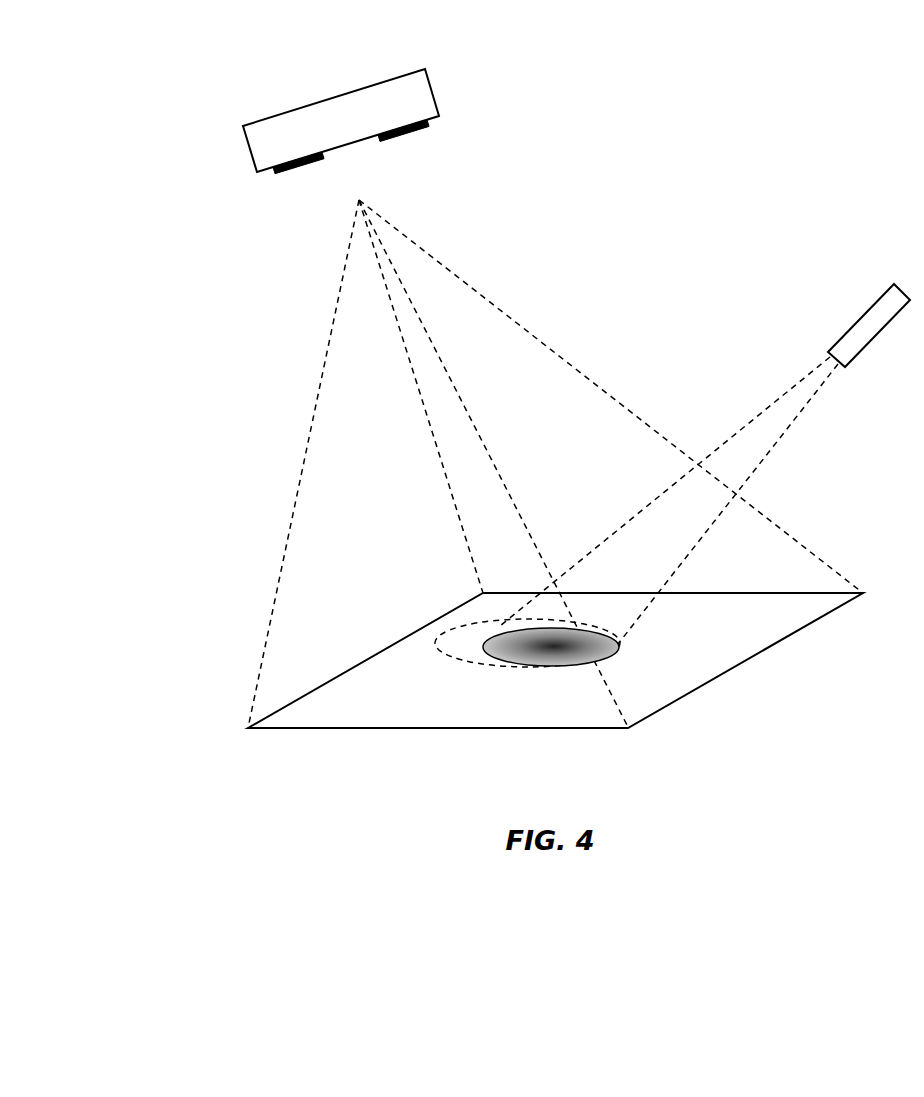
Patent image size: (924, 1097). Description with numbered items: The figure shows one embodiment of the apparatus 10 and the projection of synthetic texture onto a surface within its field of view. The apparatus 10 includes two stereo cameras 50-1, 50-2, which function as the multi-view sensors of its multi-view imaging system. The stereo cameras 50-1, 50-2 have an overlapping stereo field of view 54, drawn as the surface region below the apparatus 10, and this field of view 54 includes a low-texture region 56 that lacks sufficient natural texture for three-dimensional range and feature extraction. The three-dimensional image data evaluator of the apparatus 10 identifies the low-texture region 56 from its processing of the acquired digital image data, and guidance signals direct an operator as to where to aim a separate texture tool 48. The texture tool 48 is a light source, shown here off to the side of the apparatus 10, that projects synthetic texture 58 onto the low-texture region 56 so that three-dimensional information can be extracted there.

The apparatus 10 is at (432, 93).
The stereo camera 50-1 is at (403, 137).
The stereo camera 50-2 is at (297, 174).
The texture tool 48 is at (860, 315).
The stereo field of view 54 is at (703, 686).
The low-texture region 56 is at (478, 623).
The synthetic texture 58 is at (547, 650).